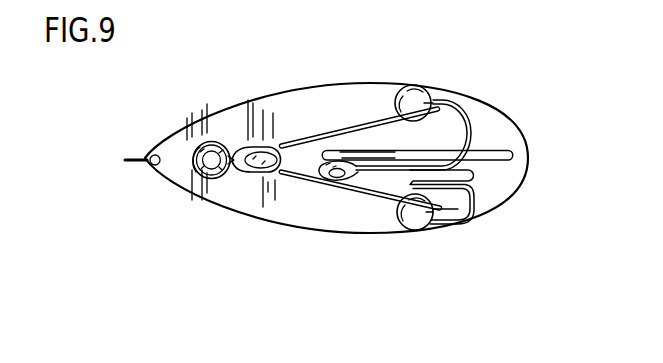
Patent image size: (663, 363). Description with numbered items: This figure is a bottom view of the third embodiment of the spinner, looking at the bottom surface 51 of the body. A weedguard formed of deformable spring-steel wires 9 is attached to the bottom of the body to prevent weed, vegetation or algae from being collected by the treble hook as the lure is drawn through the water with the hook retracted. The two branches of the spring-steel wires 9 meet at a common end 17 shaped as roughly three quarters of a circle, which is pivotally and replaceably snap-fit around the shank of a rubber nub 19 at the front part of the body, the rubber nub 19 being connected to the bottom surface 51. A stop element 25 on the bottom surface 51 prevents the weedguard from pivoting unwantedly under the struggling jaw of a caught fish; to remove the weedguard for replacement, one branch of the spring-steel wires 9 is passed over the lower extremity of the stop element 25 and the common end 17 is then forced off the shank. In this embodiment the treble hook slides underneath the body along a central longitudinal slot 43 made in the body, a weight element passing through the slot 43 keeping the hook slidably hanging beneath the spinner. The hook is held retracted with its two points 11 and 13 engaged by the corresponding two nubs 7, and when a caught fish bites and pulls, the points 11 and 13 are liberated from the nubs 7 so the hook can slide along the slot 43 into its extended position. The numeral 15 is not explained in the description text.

The nubs 7 is at (413, 88).
The spring-steel wires 9 is at (305, 137).
The point 11 is at (427, 222).
The point 13 is at (431, 102).
The hook eye 15 is at (432, 198).
The common end 17 is at (218, 141).
The rubber nub 19 is at (184, 178).
The stop element 25 is at (253, 173).
The central longitudinal slot 43 is at (505, 151).
The bottom surface 51 is at (362, 101).